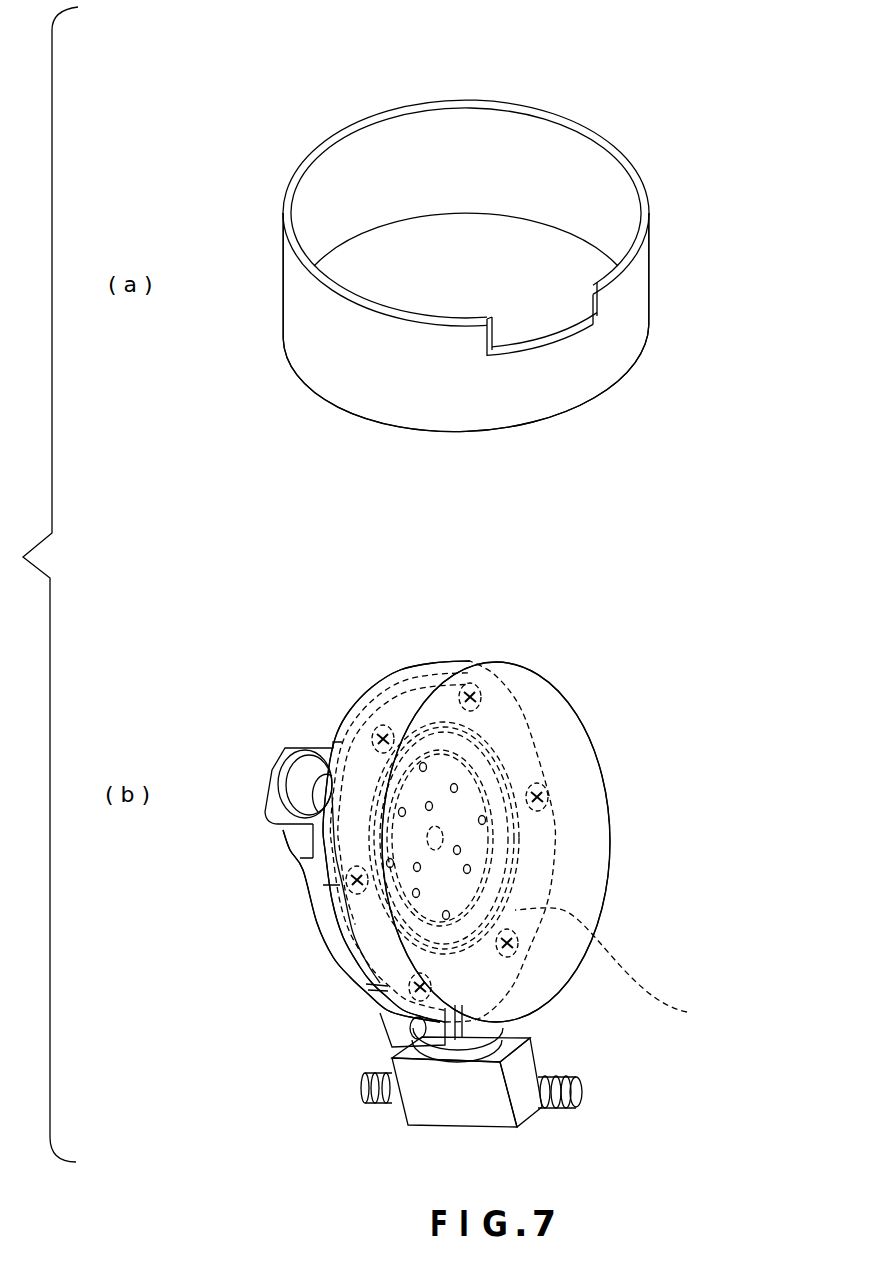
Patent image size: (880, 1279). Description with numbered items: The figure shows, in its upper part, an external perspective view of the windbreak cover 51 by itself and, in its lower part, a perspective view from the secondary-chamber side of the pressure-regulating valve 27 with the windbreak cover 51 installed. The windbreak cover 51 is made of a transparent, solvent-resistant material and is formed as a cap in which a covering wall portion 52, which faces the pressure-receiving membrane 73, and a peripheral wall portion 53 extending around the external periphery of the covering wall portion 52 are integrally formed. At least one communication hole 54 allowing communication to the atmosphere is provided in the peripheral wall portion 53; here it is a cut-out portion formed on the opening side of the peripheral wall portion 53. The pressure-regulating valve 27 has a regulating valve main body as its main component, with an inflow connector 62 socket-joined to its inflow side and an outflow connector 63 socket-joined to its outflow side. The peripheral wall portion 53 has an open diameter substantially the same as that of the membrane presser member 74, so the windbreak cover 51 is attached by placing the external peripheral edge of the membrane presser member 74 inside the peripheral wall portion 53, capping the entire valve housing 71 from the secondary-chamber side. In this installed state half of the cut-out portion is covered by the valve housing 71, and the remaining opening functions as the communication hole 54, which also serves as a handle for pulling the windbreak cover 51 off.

The pressure-regulating valve 27 is at (193, 980).
The windbreak cover 51 is at (652, 64).
The covering wall portion 52 is at (453, 267).
The peripheral wall portion 53 is at (648, 275).
The communication hole 54 is at (560, 338).
The inflow connector 62 is at (268, 746).
The outflow connector 63 is at (335, 1078).
The valve housing 71 is at (326, 913).
The pressure-receiving membrane 73 is at (495, 784).
The membrane presser member 74 is at (620, 968).